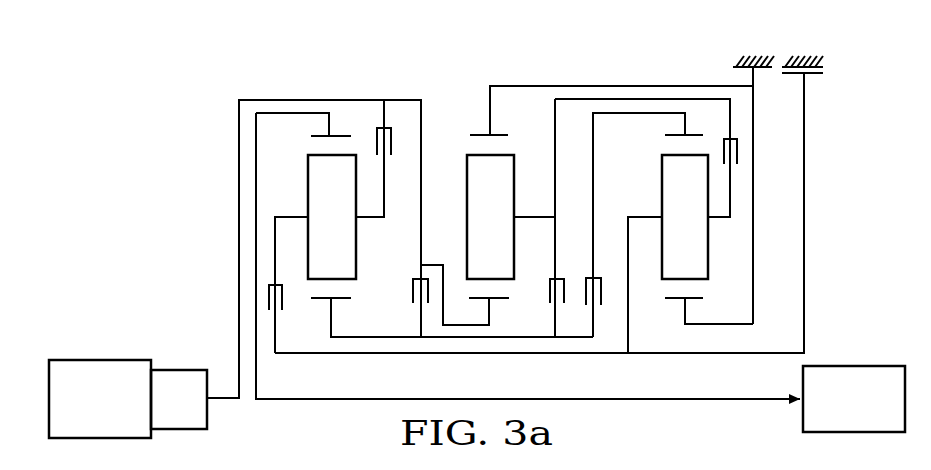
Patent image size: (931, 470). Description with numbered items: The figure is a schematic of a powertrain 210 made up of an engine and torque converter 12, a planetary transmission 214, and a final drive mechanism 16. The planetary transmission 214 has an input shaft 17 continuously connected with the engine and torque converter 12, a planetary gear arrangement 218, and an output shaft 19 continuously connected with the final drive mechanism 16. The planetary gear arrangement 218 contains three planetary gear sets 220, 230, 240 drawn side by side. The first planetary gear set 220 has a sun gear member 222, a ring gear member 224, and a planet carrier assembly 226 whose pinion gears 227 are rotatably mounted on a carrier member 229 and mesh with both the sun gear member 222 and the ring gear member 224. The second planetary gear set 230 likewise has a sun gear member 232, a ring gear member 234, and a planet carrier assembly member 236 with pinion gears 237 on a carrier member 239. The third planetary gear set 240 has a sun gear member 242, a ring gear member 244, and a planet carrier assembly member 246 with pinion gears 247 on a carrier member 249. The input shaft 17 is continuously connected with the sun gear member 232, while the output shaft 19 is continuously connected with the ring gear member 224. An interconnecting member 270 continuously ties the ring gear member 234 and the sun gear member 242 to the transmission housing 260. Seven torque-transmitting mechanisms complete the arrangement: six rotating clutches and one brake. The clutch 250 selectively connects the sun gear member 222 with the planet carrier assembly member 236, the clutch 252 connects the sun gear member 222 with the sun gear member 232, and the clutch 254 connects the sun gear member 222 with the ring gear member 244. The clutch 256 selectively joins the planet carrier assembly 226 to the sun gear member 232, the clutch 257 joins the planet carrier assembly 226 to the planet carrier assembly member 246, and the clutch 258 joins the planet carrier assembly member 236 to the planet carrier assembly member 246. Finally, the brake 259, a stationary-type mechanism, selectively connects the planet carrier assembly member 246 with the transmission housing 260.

The engine and torque converter 12 is at (117, 343).
The final drive mechanism 16 is at (837, 351).
The input shaft 17 is at (230, 401).
The output shaft 19 is at (757, 400).
The powertrain 210 is at (158, 110).
The planetary transmission 214 is at (513, 77).
The planetary gear arrangement 218 is at (625, 77).
The planetary gear set 220 is at (319, 303).
The sun gear member 222 is at (342, 302).
The ring gear member 224 is at (323, 130).
The planet carrier assembly 226 is at (297, 205).
The pinion gears 227 is at (345, 208).
The carrier member 229 is at (289, 215).
The planetary gear set 230 is at (477, 304).
The sun gear member 232 is at (500, 302).
The ring gear member 234 is at (482, 133).
The planet carrier assembly member 236 is at (526, 211).
The pinion gears 237 is at (504, 208).
The carrier member 239 is at (537, 219).
The planetary gear set 240 is at (676, 304).
The sun gear member 242 is at (700, 302).
The ring gear member 244 is at (675, 133).
The planet carrier assembly member 246 is at (657, 209).
The pinion gears 247 is at (699, 208).
The carrier member 249 is at (650, 213).
The clutch 250 is at (569, 306).
The clutch 252 is at (409, 310).
The clutch 254 is at (603, 306).
The clutch 256 is at (369, 120).
The clutch 257 is at (266, 282).
The clutch 258 is at (742, 166).
The brake 259 is at (827, 67).
The transmission housing 260 is at (788, 63).
The interconnecting member 270 is at (567, 83).